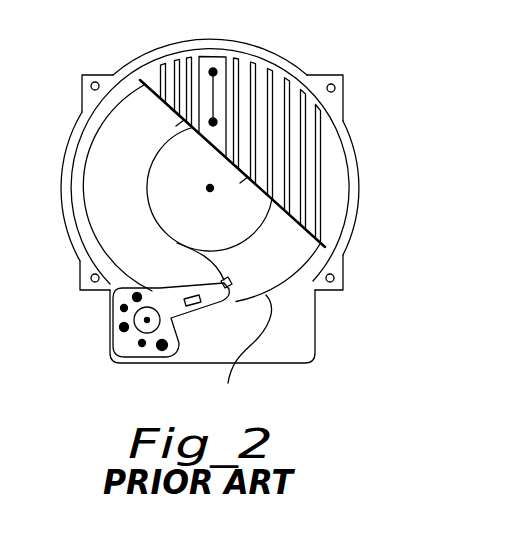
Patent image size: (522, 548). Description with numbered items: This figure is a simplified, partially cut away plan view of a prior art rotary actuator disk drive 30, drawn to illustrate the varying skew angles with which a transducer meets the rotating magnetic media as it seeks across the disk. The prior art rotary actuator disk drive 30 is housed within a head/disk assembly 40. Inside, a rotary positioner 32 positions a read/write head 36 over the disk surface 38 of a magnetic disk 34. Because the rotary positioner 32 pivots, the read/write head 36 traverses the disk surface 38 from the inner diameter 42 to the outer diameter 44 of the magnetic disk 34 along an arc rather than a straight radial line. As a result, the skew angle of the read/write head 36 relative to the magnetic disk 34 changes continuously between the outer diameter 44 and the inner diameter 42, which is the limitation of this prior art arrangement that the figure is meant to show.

The prior art rotary actuator disk drive 30 is at (318, 392).
The rotary positioner 32 is at (134, 322).
The magnetic disk 34 is at (250, 350).
The read/write head 36 is at (221, 268).
The disk surface 38 is at (103, 194).
The head/disk assembly (HDA) 40 is at (390, 180).
The inner diameter 42 is at (158, 163).
The outer diameter 44 is at (316, 302).